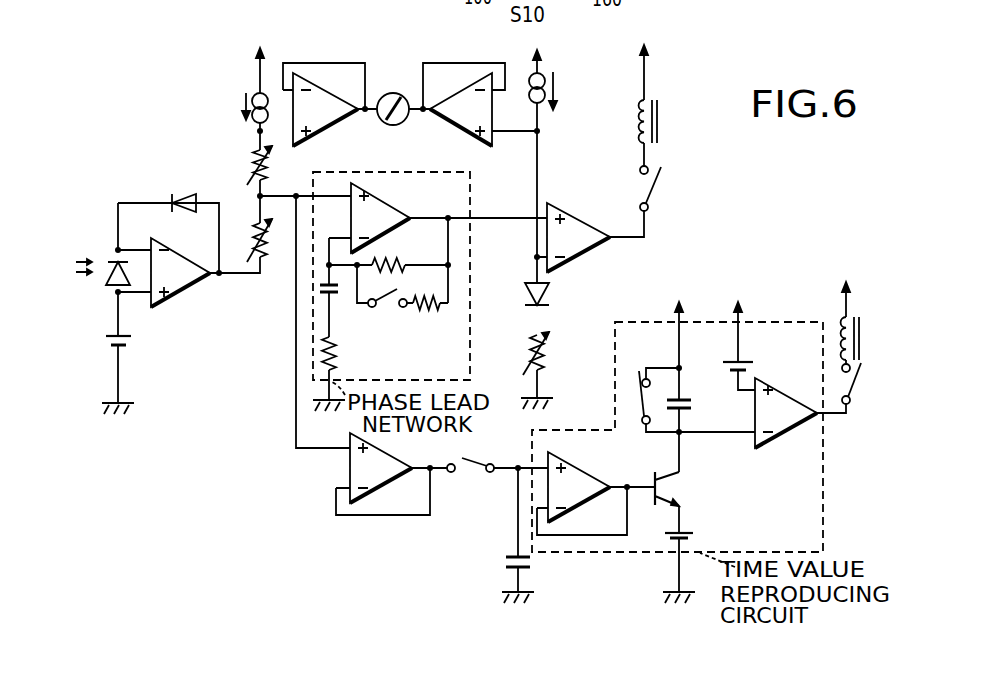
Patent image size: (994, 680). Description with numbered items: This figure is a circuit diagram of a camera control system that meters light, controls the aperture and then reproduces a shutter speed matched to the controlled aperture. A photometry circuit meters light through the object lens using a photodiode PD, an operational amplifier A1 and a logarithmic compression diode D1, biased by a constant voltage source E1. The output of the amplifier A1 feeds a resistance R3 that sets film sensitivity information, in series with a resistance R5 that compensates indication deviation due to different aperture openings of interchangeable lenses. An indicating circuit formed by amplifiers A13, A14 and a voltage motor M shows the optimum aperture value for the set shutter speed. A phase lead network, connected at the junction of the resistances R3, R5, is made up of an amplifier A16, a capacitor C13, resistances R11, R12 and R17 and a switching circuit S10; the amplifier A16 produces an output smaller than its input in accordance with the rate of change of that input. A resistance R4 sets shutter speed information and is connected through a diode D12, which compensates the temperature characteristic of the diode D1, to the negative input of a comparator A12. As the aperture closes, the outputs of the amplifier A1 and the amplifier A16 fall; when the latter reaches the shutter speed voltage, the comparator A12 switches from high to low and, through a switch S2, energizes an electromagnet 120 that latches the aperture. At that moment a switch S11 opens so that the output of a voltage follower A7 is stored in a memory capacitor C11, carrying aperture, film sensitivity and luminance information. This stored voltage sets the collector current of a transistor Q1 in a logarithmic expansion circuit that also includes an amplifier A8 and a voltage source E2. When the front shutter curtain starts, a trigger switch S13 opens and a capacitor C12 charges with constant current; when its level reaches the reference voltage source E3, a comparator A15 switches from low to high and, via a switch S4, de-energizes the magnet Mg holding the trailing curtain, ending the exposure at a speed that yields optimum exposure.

The photodiode PD is at (108, 283).
The biasing constant voltage source E1 is at (107, 339).
The logarithmic compression diode D1 is at (188, 194).
The operational amplifier A1 is at (182, 293).
The resistance for setting information of film sensitivity R3 is at (266, 246).
The resistance for compensating indication deviation R5 is at (270, 158).
The amplifier A13 is at (318, 128).
The voltage motor M is at (393, 92).
The amplifier A14 is at (452, 128).
The comparator A12 is at (587, 222).
The switch S2 is at (654, 190).
The electromagnet 120 is at (660, 101).
The diode D12 is at (545, 288).
The resistance for setting information of the shutter speed R4 is at (542, 354).
The amplifier A16 is at (383, 197).
The resistance R12 is at (385, 245).
The capacitor C13 is at (336, 300).
The switching circuit S10 is at (387, 308).
The resistance R17 is at (437, 312).
The resistance R11 is at (338, 344).
The voltage follower A7 is at (385, 480).
The switch S11 is at (480, 456).
The memory capacitor C11 is at (512, 573).
The amplifier A8 is at (600, 466).
The transistor Q1 is at (656, 497).
The source of voltage E2 is at (704, 529).
The trigger switch S13 is at (633, 410).
The capacitor C12 is at (700, 395).
The source of voltage E3 is at (750, 355).
The comparator A15 is at (786, 435).
The switch S4 is at (854, 396).
The magnet Mg is at (872, 334).